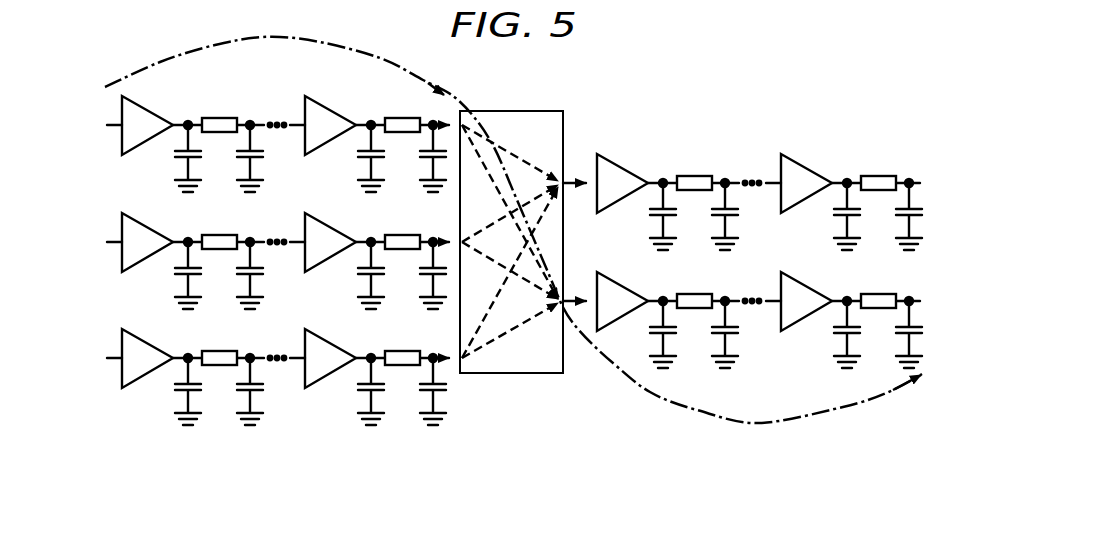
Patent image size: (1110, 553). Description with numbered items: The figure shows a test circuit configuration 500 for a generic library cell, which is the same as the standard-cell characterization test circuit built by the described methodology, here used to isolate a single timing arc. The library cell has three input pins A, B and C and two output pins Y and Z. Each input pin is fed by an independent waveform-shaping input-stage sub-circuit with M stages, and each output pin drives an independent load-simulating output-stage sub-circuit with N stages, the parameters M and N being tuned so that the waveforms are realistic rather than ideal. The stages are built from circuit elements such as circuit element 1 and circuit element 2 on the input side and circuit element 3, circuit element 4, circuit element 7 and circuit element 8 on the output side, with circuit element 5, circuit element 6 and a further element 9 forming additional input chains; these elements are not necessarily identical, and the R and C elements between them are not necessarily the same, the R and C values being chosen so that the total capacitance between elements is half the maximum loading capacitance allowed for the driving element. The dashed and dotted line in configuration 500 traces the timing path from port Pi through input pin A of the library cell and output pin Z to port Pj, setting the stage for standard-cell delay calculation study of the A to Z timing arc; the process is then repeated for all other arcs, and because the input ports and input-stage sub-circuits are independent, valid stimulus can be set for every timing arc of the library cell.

The configuration 500 is at (870, 116).
The circuit element 1 is at (147, 125).
The circuit element 2 is at (330, 125).
The circuit element 3 is at (622, 183).
The circuit element 4 is at (806, 183).
The circuit element 5 is at (147, 242).
The circuit element 6 is at (330, 242).
The circuit element 7 is at (622, 301).
The circuit element 8 is at (806, 301).
The amplifier 9 is at (147, 358).